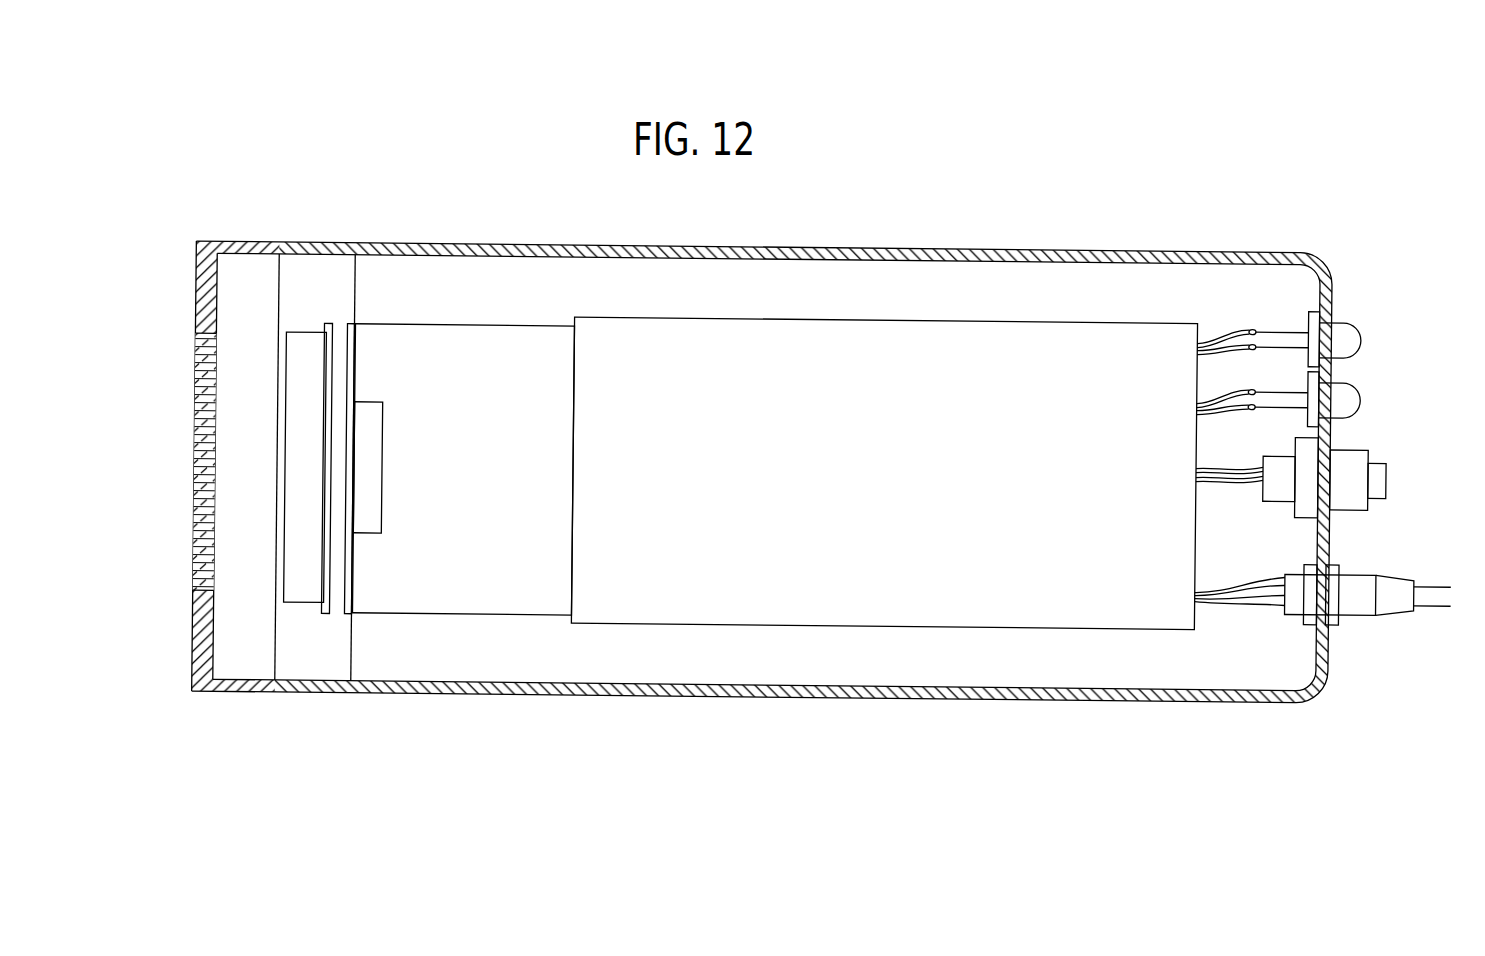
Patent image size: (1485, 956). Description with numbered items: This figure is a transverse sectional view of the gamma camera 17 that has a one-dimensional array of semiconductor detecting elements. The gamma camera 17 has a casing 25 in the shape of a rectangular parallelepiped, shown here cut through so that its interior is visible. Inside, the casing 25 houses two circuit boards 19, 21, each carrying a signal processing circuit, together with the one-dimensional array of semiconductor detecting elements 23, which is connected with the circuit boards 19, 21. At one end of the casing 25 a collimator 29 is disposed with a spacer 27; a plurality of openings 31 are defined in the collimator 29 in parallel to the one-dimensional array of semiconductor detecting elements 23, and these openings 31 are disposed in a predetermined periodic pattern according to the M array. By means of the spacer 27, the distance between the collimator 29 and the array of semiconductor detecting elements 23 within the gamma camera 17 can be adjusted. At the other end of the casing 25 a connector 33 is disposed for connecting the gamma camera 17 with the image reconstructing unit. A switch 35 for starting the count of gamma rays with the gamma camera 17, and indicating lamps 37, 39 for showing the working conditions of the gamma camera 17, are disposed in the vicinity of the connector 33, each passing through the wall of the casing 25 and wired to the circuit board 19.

The gamma camera 17 is at (974, 224).
The circuit board 19 is at (894, 625).
The circuit board 21 is at (451, 617).
The one-dimensional array of semiconductor detecting elements 23 is at (308, 352).
The casing 25 is at (796, 247).
The spacer 27 is at (246, 697).
The collimator 29 is at (194, 621).
The openings 31 is at (194, 348).
The connector 33 is at (1337, 616).
The switch 35 is at (1352, 455).
The indicating lamp 37 is at (1350, 332).
The indicating lamp 39 is at (1350, 392).